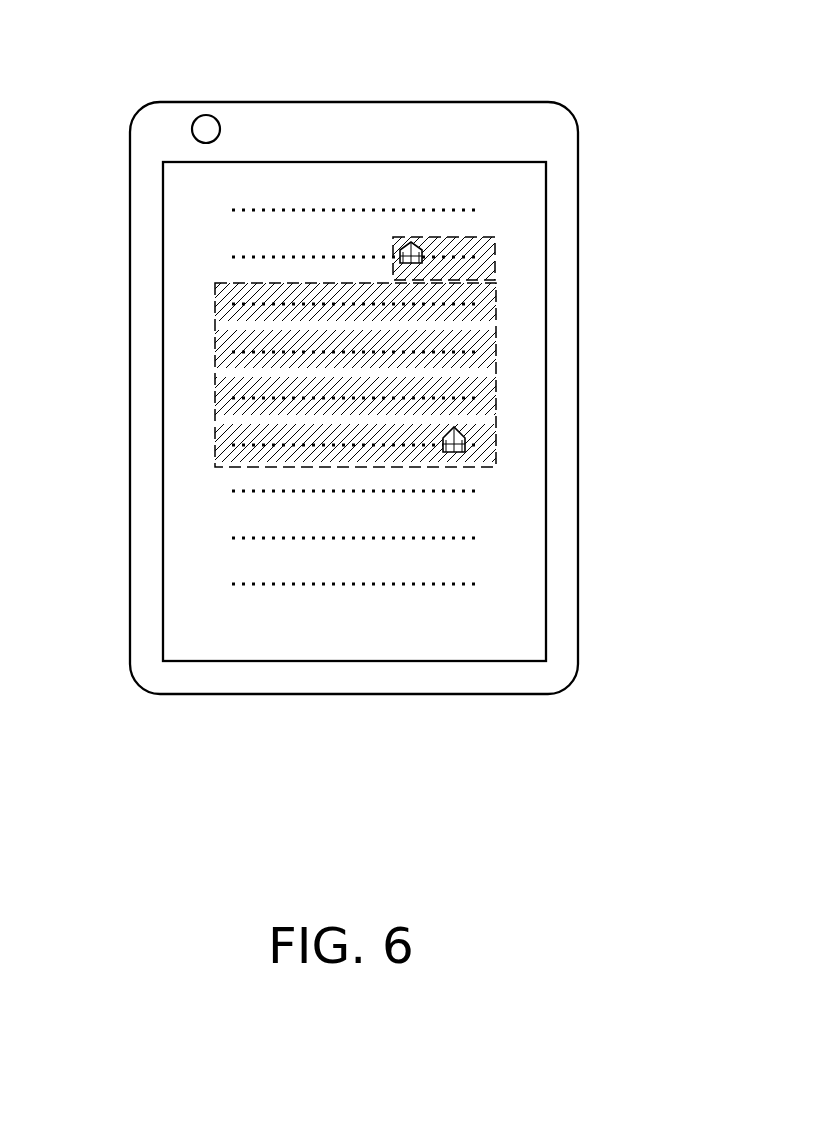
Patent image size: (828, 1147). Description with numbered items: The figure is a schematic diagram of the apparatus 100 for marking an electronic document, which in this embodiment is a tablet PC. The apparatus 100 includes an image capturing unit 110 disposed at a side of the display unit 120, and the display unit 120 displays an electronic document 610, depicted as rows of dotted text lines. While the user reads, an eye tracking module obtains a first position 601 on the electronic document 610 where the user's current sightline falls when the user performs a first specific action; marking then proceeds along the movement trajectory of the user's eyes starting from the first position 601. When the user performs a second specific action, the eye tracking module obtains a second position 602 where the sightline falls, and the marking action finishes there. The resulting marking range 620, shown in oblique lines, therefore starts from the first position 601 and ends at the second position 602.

The apparatus for marking electronic document 100 is at (578, 640).
The image capturing unit 110 is at (206, 114).
The display unit 120 is at (546, 203).
The electronic document 610 is at (410, 603).
The marking range 620 is at (215, 375).
The first position 601 is at (413, 240).
The second position 602 is at (465, 432).